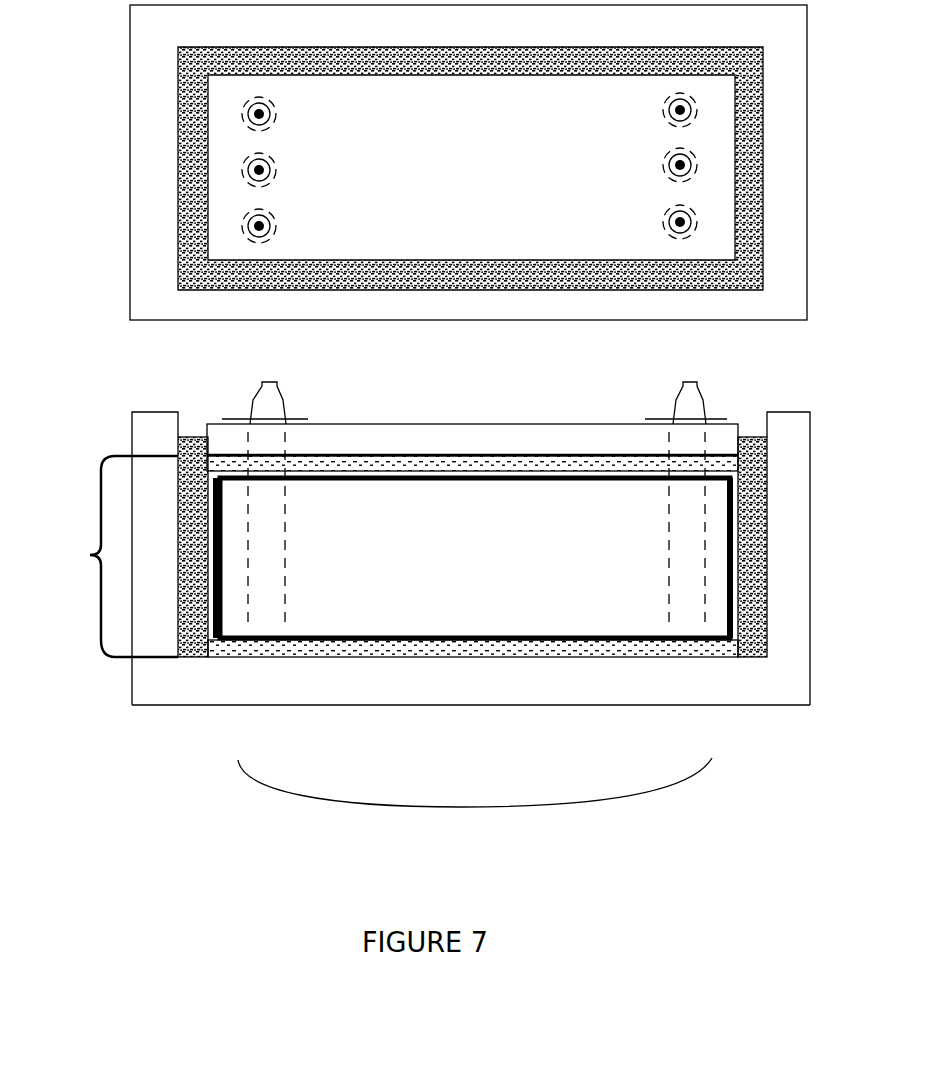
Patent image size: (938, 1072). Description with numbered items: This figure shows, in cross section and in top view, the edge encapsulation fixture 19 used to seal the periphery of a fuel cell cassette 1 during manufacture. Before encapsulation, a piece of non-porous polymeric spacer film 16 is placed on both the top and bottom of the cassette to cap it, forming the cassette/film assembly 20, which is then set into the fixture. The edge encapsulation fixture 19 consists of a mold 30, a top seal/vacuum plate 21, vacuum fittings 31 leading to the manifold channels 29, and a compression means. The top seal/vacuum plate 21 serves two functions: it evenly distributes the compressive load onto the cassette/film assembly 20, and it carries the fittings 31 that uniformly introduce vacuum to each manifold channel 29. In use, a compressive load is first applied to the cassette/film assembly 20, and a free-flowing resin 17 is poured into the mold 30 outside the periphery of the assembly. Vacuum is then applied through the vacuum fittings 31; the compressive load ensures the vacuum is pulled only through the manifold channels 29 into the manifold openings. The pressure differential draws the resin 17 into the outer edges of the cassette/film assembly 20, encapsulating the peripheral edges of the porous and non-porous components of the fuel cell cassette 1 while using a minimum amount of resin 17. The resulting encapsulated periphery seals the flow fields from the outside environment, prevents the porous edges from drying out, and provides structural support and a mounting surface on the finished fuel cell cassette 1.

The fuel cell cassette 1 is at (523, 610).
The non-porous polymeric spacer film 16 is at (430, 640).
The resin 17 is at (187, 493).
The edge encapsulation fixture 19 is at (470, 808).
The cassette/film assembly 20 is at (90, 556).
The top seal/vacuum plate 21 is at (353, 442).
The manifold channel 29 is at (692, 615).
The mold 30 is at (165, 688).
The vacuum fittings 31 is at (246, 237).